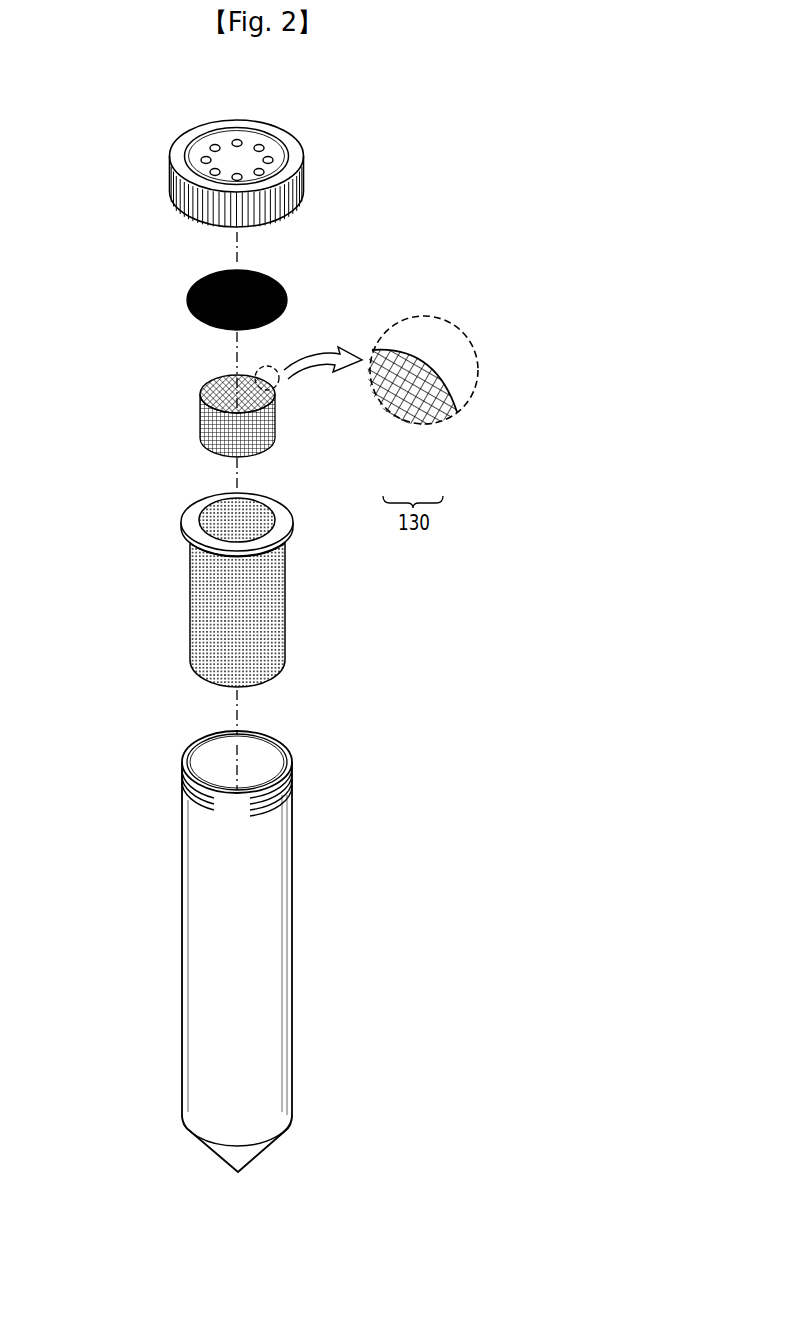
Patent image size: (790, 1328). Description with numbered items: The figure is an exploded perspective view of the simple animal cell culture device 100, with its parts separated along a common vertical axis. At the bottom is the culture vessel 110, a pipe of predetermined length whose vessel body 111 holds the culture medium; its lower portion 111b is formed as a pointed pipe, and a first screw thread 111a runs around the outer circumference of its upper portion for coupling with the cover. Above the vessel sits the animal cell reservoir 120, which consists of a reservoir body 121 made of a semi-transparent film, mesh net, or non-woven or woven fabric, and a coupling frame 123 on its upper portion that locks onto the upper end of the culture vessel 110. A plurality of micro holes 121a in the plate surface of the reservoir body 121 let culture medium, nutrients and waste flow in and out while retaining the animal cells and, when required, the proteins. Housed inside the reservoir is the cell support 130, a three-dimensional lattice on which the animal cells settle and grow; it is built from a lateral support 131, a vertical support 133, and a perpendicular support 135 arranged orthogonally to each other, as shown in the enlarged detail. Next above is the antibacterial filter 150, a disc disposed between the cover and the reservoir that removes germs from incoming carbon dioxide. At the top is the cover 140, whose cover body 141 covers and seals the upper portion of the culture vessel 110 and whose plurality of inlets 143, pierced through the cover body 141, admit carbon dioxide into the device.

The simple animal cell culture device 100 is at (408, 140).
The culture vessel 110 is at (286, 988).
The vessel body 111 is at (292, 902).
The first screw thread 111a is at (292, 778).
The lower portion 111b is at (238, 1175).
The animal cell reservoir 120 is at (162, 590).
The reservoir body 121 is at (186, 615).
The micro holes 121a is at (203, 605).
The coupling frame 123 is at (201, 507).
The cell support 130 is at (226, 410).
The lateral support 131 is at (390, 408).
The vertical support 133 is at (440, 400).
The perpendicular support 135 is at (208, 433).
The cover 140 is at (240, 178).
The cover body 141 is at (178, 160).
The inlets 143 is at (211, 148).
The antibacterial filter 150 is at (188, 300).